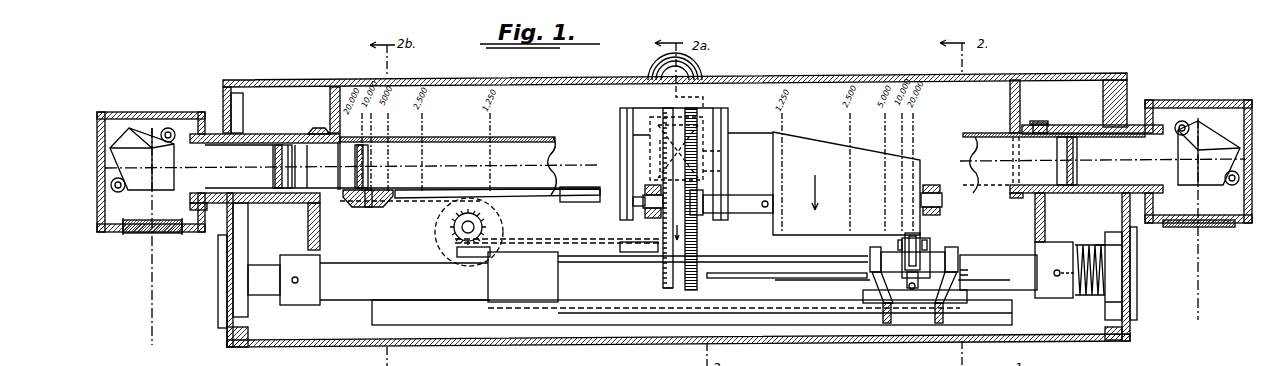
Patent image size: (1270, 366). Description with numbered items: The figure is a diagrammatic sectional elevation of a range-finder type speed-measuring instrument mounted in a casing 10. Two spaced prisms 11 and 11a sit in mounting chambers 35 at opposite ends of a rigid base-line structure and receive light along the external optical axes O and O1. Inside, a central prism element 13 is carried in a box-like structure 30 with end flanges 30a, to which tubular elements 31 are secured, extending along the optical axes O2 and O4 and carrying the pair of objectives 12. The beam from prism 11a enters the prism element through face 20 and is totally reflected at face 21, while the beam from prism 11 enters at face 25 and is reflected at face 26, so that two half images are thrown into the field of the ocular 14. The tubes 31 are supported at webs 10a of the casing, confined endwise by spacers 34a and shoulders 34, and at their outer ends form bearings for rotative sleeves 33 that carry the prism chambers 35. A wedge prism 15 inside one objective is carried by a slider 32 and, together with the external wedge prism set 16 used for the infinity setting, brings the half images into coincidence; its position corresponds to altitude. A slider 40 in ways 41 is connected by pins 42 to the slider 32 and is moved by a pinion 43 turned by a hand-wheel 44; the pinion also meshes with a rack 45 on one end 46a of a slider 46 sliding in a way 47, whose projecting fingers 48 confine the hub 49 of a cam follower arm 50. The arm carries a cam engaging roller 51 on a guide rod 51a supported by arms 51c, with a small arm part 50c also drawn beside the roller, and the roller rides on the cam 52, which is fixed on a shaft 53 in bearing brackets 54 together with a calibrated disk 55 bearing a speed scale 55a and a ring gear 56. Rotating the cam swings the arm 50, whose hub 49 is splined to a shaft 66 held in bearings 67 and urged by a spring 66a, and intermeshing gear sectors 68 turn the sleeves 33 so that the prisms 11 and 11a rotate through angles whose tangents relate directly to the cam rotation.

The casing 10 is at (812, 67).
The web 10a is at (331, 107).
The prism 11 is at (137, 125).
The prism 11a is at (1216, 121).
The objective 12 is at (268, 161).
The prism element 13 is at (657, 117).
The ocular 14 is at (642, 57).
The wedge prism 15 is at (373, 175).
The wedge prism set 16 is at (137, 234).
The face 20 is at (720, 171).
The face 21 is at (656, 152).
The face 25 is at (660, 172).
The face 26 is at (720, 151).
The box-like structure 30 is at (715, 110).
The end flange 30a is at (722, 122).
The tubular element 31 is at (533, 137).
The slider 32 is at (398, 188).
The rotative sleeve 33 is at (258, 134).
The shoulder 34 is at (325, 206).
The spacer 34a is at (322, 128).
The mounting chamber 35 is at (168, 112).
The slider 40 is at (413, 208).
The way 41 is at (573, 205).
The pin 42 is at (368, 208).
The pinion 43 is at (450, 230).
The hand-wheel 44 is at (505, 222).
The rack 45 is at (455, 250).
The slider 46 is at (820, 303).
The slider end 46a is at (523, 277).
The way 47 is at (841, 317).
The projecting finger 48 is at (870, 252).
The hub 49 is at (950, 251).
The cam follower arm 50 is at (928, 252).
The carrier lug 50c is at (900, 246).
The cam engaging roller 51 is at (908, 233).
The guide rod 51a is at (907, 282).
The arm 51c is at (967, 300).
The cam 52 is at (815, 146).
The shaft 53 is at (747, 213).
The bearing bracket 54 is at (655, 219).
The calibrated disk 55 is at (683, 248).
The calibrated scale 55a is at (663, 268).
The ring gear 56 is at (697, 232).
The shaft 66 is at (642, 275).
The spring 66a is at (1092, 245).
The bearing 67 is at (235, 258).
The gear sector 68 is at (308, 262).
The optical axis O is at (152, 298).
The optical axis O1 is at (1199, 272).
The optical axis O2 is at (976, 160).
The optical axis O4 is at (556, 156).